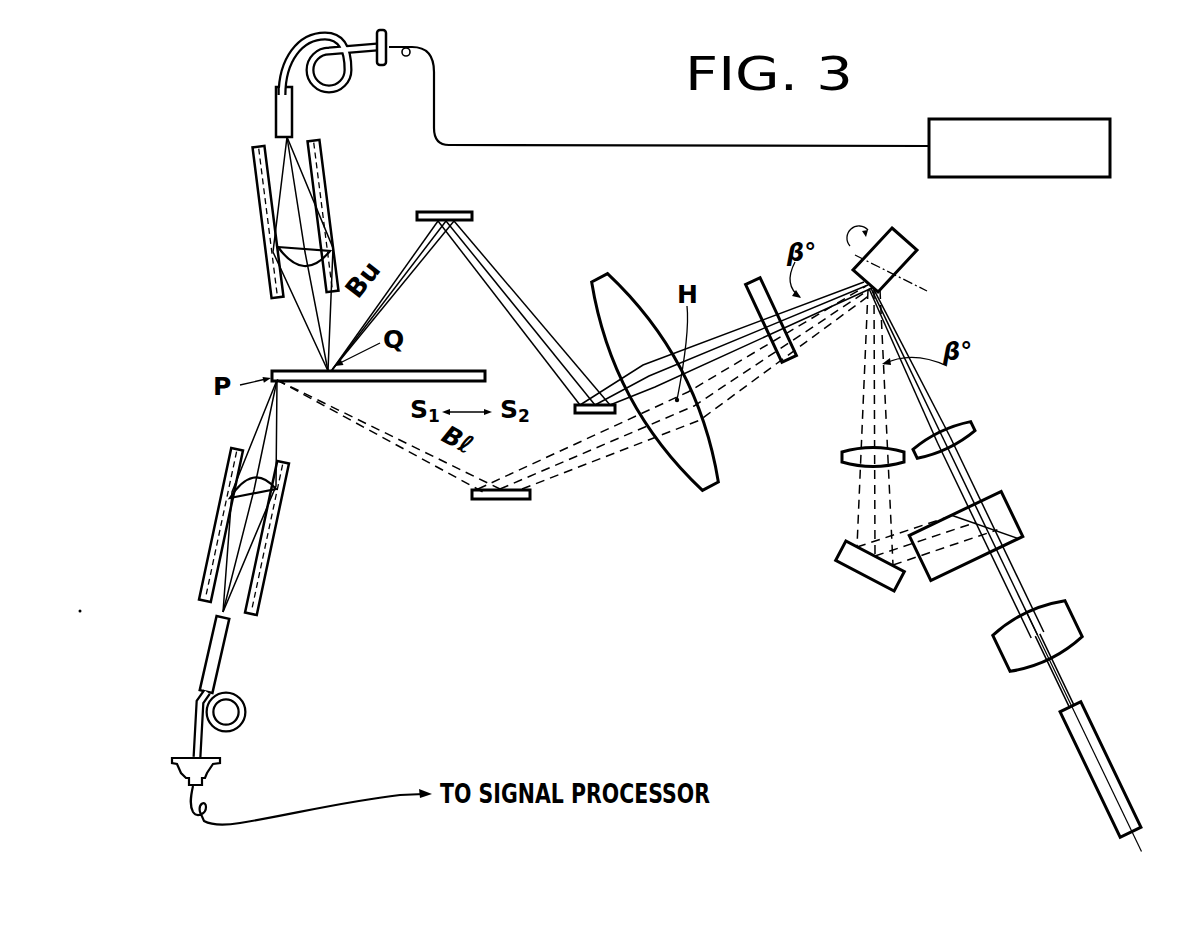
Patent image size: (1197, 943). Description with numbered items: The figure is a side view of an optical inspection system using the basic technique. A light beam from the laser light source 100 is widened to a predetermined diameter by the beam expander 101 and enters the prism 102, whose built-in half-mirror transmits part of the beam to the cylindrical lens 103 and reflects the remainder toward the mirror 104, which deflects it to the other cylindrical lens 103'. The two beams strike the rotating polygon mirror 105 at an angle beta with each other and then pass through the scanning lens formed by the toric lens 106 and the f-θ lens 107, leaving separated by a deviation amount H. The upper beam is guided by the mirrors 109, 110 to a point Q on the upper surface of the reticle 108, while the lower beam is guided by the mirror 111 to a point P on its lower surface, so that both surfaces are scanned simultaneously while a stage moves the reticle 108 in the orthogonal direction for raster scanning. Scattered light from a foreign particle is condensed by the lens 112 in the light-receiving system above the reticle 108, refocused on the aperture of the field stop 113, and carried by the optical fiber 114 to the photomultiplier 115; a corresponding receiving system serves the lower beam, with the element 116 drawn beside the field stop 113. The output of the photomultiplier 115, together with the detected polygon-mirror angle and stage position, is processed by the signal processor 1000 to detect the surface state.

The laser light source 100 is at (1093, 717).
The beam expander 101 is at (1078, 614).
The prism 102 is at (1023, 520).
The cylindrical lens 103 is at (979, 432).
The cylindrical lens 103' is at (838, 463).
The mirror 104 is at (835, 562).
The polygon mirror 105 is at (920, 242).
The toric lens 106 is at (762, 277).
The f-θ lens 107 is at (602, 280).
The reticle 108 is at (290, 368).
The mirror 109 is at (580, 414).
The mirror 110 is at (455, 212).
The mirror 111 is at (528, 500).
The lens 112 is at (290, 255).
The field stop 113 is at (262, 149).
The optical fiber 114 is at (278, 95).
The photomultiplier 115 is at (382, 66).
The light shielding block 116 is at (330, 188).
The signal processor 1000 is at (1112, 143).